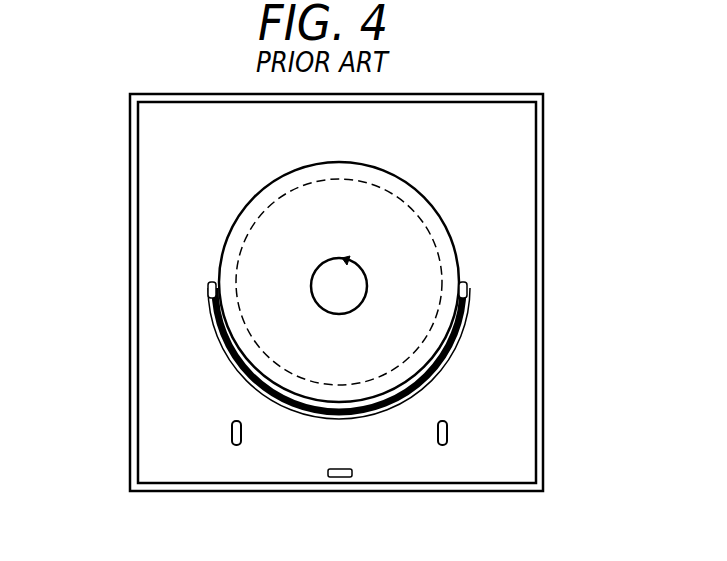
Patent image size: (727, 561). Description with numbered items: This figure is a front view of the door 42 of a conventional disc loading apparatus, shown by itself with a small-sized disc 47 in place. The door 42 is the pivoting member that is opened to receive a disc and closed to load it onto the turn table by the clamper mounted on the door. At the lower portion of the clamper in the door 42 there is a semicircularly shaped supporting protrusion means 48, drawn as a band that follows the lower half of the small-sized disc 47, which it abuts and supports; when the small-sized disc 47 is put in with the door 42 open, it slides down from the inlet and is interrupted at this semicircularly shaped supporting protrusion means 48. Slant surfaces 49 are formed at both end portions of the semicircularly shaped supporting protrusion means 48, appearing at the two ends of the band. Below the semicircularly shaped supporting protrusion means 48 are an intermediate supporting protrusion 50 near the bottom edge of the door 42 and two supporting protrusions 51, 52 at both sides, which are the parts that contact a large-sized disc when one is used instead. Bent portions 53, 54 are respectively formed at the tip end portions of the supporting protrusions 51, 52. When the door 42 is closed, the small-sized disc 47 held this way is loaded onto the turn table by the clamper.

The door 42 is at (545, 139).
The small-sized disc 47 is at (452, 237).
The semicircularly shaped supporting protrusion means 48 is at (458, 343).
The slant surfaces 49 is at (468, 298).
The intermediate supporting protrusion 50 is at (341, 477).
The supporting protrusion 51 is at (233, 444).
The supporting protrusion 52 is at (447, 443).
The bent portion 53 is at (233, 423).
The bent portion 54 is at (447, 425).